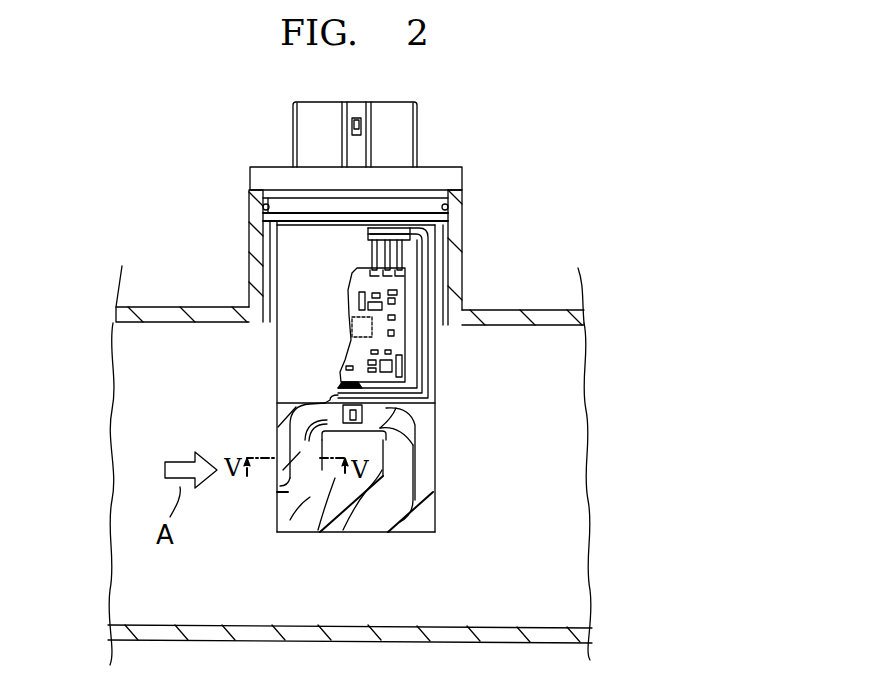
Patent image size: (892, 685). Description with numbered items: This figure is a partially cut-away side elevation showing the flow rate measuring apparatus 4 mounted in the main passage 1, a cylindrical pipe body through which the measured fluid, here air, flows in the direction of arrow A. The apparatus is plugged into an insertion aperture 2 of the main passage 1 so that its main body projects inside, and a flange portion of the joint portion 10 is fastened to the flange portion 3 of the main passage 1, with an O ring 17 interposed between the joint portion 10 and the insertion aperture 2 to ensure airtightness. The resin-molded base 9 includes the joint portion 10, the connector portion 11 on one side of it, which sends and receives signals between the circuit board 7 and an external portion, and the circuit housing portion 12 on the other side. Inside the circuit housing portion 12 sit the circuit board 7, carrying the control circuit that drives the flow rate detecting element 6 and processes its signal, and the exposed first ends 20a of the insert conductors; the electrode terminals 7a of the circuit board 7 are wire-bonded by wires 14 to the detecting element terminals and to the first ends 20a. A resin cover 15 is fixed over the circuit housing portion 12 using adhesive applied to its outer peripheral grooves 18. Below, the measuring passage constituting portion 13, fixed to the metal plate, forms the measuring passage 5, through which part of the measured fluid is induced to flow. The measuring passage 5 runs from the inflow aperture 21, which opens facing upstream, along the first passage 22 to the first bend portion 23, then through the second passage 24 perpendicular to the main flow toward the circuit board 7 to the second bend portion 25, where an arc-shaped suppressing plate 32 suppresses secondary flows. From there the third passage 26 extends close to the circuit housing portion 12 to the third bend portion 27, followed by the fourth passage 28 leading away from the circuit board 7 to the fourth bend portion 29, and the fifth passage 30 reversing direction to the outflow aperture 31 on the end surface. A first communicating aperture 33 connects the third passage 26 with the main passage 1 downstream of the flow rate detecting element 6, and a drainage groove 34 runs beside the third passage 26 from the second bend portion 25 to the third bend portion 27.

The main passage 1 is at (197, 302).
The insertion aperture 2 is at (268, 258).
The flange portion 3 is at (256, 224).
The flow rate measuring apparatus 4 is at (440, 137).
The measuring passage 5 is at (276, 494).
The flow rate detecting element 6 is at (326, 406).
The circuit board 7 is at (400, 330).
The electrode terminals 7a is at (402, 273).
The base 9 is at (463, 167).
The joint portion 10 is at (248, 175).
The connector portion 11 is at (288, 140).
The circuit housing portion 12 is at (440, 300).
The measuring passage constituting portion 13 is at (435, 532).
The wires 14 is at (398, 258).
The resin cover 15 is at (292, 308).
The O ring 17 is at (262, 207).
The outer peripheral grooves 18 is at (423, 357).
The first end 20a is at (420, 235).
The inflow aperture 21 is at (273, 512).
The first passage 22 is at (293, 508).
The first bend portion 23 is at (322, 512).
The second passage 24 is at (277, 437).
The second bend portion 25 is at (300, 404).
The third passage 26 is at (386, 440).
The third bend portion 27 is at (400, 420).
The fourth passage 28 is at (398, 480).
The fourth bend portion 29 is at (410, 506).
The fifth passage 30 is at (416, 523).
The outflow aperture 31 is at (362, 533).
The suppressing plate 32 is at (303, 425).
The first communicating aperture 33 is at (395, 412).
The drainage groove 34 is at (390, 442).